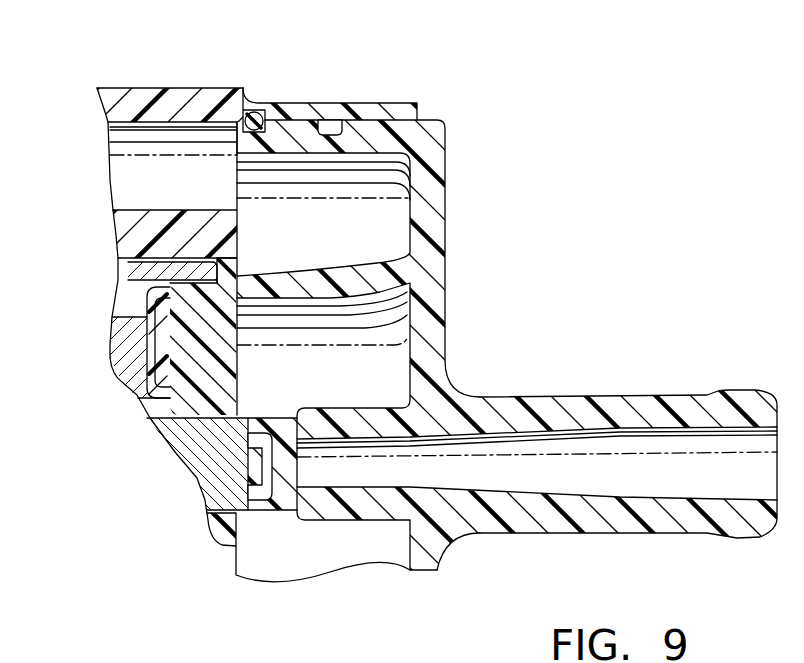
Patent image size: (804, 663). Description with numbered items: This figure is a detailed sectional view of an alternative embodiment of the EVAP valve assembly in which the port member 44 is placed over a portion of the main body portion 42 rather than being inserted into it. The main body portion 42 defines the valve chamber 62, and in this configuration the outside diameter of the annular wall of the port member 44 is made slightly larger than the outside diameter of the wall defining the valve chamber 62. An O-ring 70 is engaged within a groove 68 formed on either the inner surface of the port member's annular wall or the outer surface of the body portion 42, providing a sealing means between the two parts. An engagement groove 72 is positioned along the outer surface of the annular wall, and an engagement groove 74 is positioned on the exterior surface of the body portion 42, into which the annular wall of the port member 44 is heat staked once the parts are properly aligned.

The main body portion 42 is at (131, 84).
The port member 44 is at (627, 390).
The valve chamber 62 is at (383, 238).
The groove 68 is at (247, 124).
The O-ring 70 is at (250, 106).
The engagement groove 72 is at (262, 118).
The engagement groove 74 is at (333, 128).